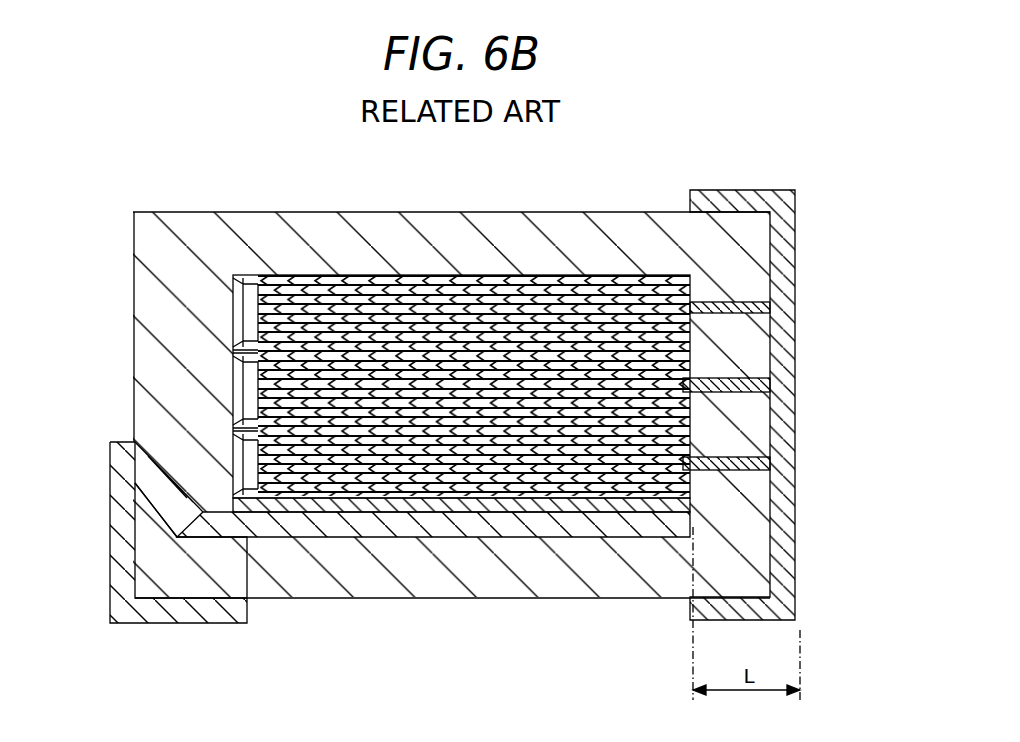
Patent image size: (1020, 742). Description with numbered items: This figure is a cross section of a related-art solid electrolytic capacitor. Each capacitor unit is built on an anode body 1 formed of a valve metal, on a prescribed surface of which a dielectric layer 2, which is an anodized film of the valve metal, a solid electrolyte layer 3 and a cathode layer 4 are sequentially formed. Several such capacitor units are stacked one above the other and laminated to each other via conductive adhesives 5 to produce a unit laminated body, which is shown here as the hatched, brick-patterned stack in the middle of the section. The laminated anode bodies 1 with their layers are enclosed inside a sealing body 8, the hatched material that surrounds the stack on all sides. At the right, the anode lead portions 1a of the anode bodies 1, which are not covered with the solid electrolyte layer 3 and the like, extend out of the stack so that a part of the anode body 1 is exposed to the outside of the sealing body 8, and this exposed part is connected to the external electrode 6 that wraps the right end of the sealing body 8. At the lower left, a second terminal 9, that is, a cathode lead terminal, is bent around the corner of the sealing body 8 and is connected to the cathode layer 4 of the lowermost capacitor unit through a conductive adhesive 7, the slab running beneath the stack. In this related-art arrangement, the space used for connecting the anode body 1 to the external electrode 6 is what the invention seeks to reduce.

The anode body 1 is at (403, 275).
The anode lead portion 1a is at (777, 286).
The dielectric layer 2 is at (347, 275).
The solid electrolyte layer 3 is at (287, 275).
The cathode layer 4 is at (257, 275).
The conductive adhesive 5 is at (503, 347).
The external electrode 6 is at (787, 341).
The conductive adhesive 7 is at (350, 510).
The sealing body 8 is at (609, 237).
The second terminal 9 is at (110, 502).